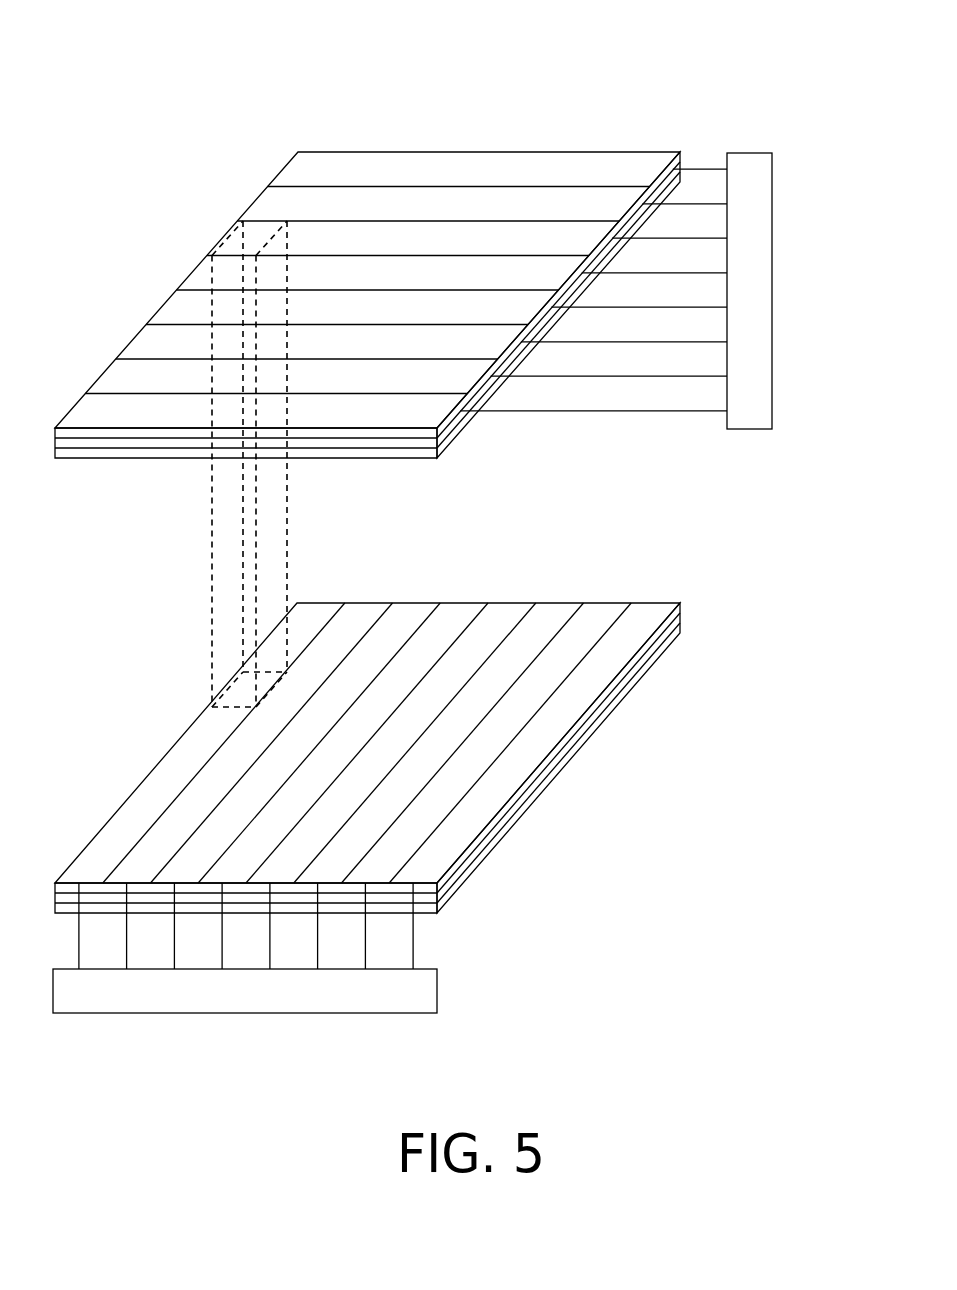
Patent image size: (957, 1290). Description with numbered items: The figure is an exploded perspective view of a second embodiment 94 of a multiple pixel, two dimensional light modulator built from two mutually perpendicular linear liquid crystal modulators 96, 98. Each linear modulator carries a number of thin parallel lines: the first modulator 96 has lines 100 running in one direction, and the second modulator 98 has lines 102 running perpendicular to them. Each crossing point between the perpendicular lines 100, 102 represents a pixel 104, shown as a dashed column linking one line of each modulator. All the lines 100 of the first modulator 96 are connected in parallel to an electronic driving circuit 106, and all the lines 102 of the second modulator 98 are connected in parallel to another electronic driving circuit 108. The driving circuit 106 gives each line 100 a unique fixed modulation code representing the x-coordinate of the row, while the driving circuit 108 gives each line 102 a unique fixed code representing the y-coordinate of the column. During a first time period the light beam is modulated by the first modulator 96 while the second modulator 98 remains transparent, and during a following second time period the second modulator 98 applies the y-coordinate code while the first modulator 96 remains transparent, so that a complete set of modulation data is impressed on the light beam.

The second embodiment 94 is at (150, 92).
The first linear liquid crystal modulator 96 is at (608, 140).
The second linear liquid crystal modulator 98 is at (610, 592).
The lines 100 is at (147, 342).
The lines 102 is at (445, 786).
The pixel 104 is at (243, 688).
The electronic driving circuit 106 is at (773, 258).
The electronic driving circuit 108 is at (318, 1014).